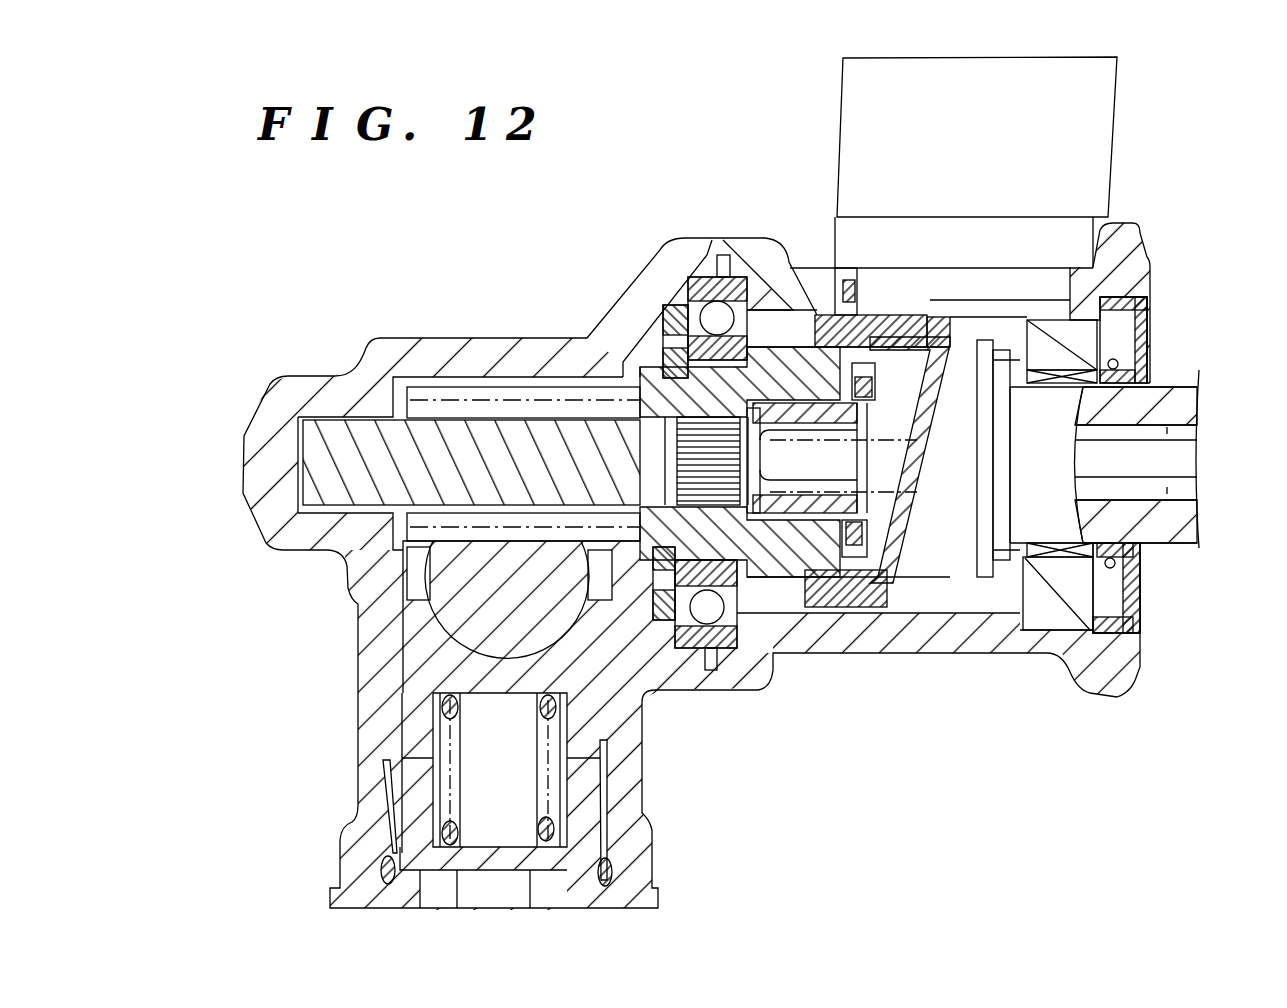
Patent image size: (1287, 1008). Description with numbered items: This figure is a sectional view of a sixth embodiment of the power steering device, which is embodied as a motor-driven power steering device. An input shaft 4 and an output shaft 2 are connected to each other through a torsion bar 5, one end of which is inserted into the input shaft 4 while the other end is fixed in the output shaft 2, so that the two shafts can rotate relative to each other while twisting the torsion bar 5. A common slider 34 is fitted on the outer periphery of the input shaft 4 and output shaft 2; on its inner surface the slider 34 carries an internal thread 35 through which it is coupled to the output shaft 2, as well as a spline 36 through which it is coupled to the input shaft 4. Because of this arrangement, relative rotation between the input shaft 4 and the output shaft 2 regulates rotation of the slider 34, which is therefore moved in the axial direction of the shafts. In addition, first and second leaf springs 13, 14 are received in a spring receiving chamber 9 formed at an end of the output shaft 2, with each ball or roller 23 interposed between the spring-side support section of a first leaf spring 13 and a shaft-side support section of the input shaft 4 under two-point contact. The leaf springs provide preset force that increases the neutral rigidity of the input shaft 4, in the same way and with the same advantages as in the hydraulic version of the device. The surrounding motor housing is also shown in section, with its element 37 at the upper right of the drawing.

The output shaft 2 is at (330, 428).
The input shaft 4 is at (890, 520).
The torsion bar 5 is at (1188, 459).
The spring receiving chamber 9 is at (857, 545).
The first leaf springs 13 is at (870, 376).
The second leaf springs 14 is at (866, 440).
The ball or roller 23 is at (915, 430).
The slider 34 is at (817, 315).
The internal thread 35 is at (835, 572).
The spline 36 is at (935, 345).
The motor housing 37 is at (1100, 172).